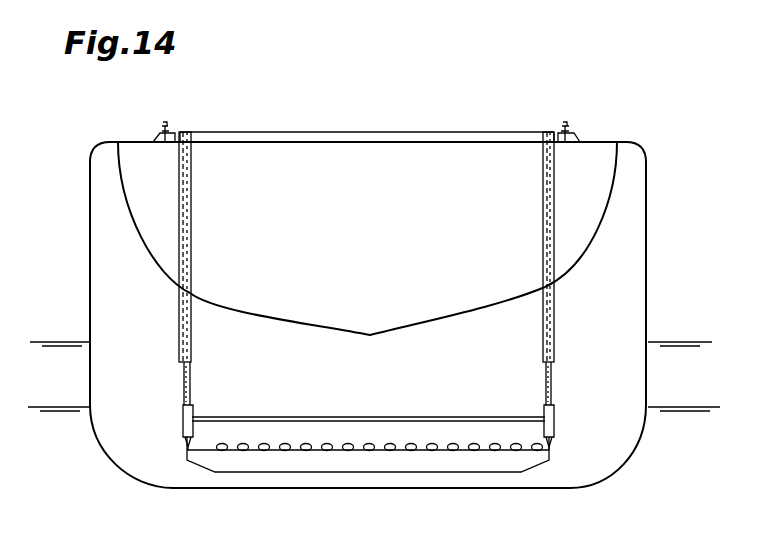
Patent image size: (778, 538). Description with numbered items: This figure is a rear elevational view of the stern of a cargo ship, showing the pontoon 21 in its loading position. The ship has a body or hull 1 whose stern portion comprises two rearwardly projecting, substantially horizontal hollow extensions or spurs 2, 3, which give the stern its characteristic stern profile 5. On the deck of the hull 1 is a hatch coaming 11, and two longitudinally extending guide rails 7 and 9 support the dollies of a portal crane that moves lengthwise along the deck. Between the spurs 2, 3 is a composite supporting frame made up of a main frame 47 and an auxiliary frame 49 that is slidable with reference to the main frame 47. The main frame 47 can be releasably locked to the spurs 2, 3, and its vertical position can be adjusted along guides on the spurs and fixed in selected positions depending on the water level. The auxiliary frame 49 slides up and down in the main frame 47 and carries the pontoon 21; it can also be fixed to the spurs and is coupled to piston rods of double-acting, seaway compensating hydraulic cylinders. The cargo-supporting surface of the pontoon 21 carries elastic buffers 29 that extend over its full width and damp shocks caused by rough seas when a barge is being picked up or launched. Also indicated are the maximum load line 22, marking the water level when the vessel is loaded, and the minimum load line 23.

The hull 1 is at (608, 452).
The spur 2 is at (133, 181).
The spur 3 is at (610, 157).
The stern profile 5 is at (262, 318).
The guide rail 7 is at (163, 126).
The guide rail 9 is at (566, 126).
The hatch coaming 11 is at (287, 132).
The pontoon 21 is at (260, 465).
The maximum load line 22 is at (676, 340).
The minimum load line 23 is at (63, 406).
The buffers 29 is at (348, 453).
The main frame 47 is at (195, 216).
The auxiliary frame 49 is at (195, 372).